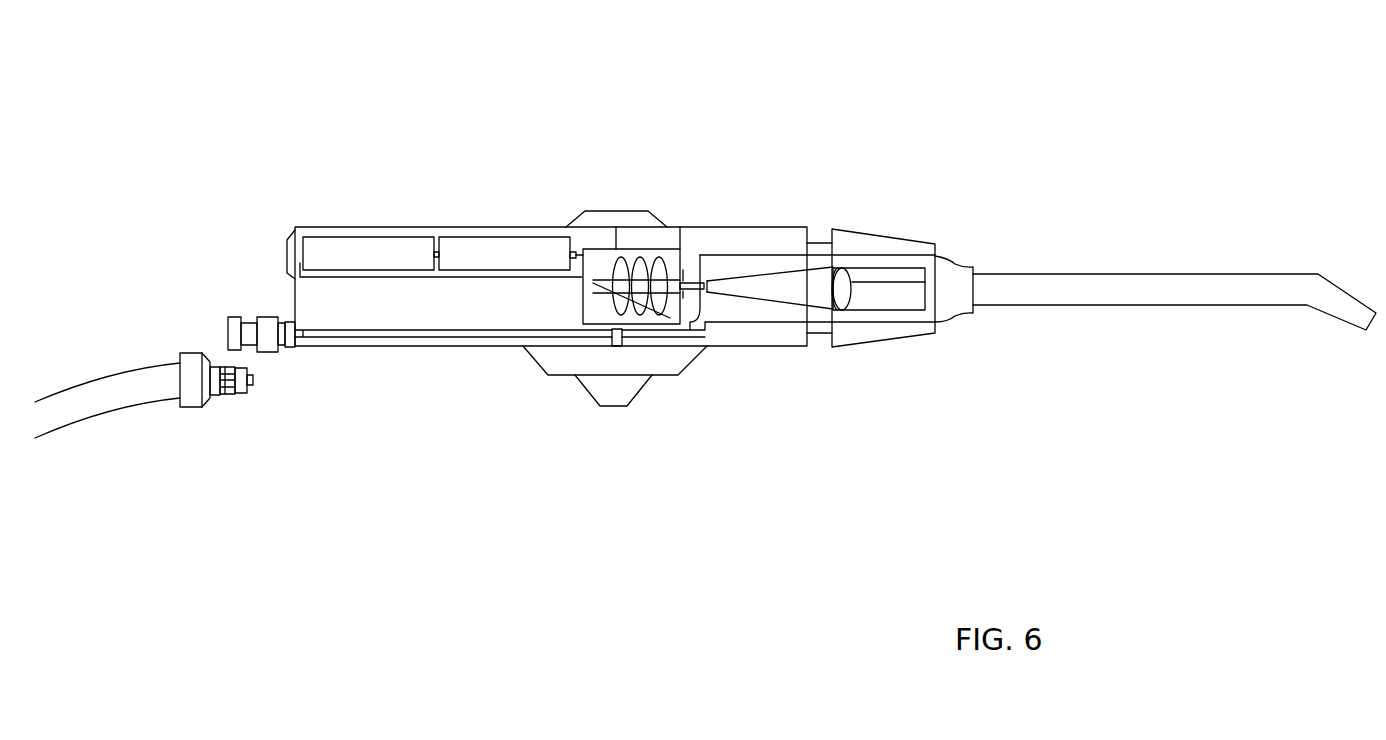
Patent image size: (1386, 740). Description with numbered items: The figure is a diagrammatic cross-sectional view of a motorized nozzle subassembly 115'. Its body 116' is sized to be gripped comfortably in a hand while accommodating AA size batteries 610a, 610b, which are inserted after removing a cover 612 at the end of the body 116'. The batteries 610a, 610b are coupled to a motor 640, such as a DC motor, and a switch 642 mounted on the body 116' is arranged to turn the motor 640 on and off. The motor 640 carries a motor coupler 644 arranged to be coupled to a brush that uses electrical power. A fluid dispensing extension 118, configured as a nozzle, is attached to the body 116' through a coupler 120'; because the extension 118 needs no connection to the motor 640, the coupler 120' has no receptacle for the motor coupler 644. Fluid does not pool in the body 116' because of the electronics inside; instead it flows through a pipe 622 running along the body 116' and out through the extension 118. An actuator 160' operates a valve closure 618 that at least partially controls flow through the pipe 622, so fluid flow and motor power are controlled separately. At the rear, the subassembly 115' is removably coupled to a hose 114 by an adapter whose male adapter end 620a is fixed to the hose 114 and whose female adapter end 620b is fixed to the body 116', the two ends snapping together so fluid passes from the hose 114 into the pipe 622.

The nozzle subassembly 115' is at (705, 281).
The cover 612 is at (287, 240).
The body 116' is at (441, 230).
The battery 610a is at (353, 243).
The battery 610b is at (488, 243).
The switch 642 is at (620, 210).
The motor 640 is at (672, 250).
The motor coupler 644 is at (785, 270).
The coupler 120' is at (910, 265).
The fluid dispensing extension 118 is at (1157, 273).
The pipe 622 is at (393, 333).
The valve closure 618 is at (612, 340).
The actuator 160' is at (615, 399).
The female adapter end 620b is at (262, 315).
The male adapter end 620a is at (202, 407).
The hose 114 is at (75, 409).